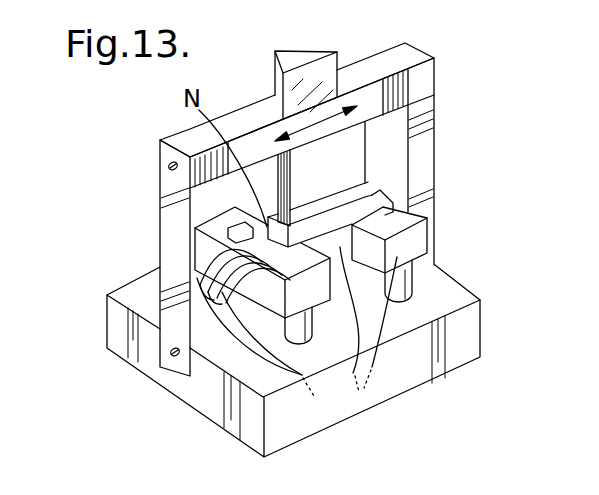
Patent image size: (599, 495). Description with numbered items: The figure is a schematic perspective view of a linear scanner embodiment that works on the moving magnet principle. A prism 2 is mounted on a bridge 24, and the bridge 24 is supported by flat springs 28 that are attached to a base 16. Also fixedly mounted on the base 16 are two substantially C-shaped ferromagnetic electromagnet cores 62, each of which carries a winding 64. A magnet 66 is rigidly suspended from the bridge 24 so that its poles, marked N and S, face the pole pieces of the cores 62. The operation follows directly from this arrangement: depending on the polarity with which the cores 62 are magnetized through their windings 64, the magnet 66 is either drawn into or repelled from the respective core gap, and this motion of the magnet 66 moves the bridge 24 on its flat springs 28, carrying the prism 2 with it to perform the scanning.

The prism 2 is at (275, 63).
The base 16 is at (217, 403).
The bridge 24 is at (418, 50).
The flat springs 28 is at (167, 238).
The electromagnet cores 62 is at (320, 302).
The winding 64 is at (233, 306).
The magnet 66 is at (352, 200).